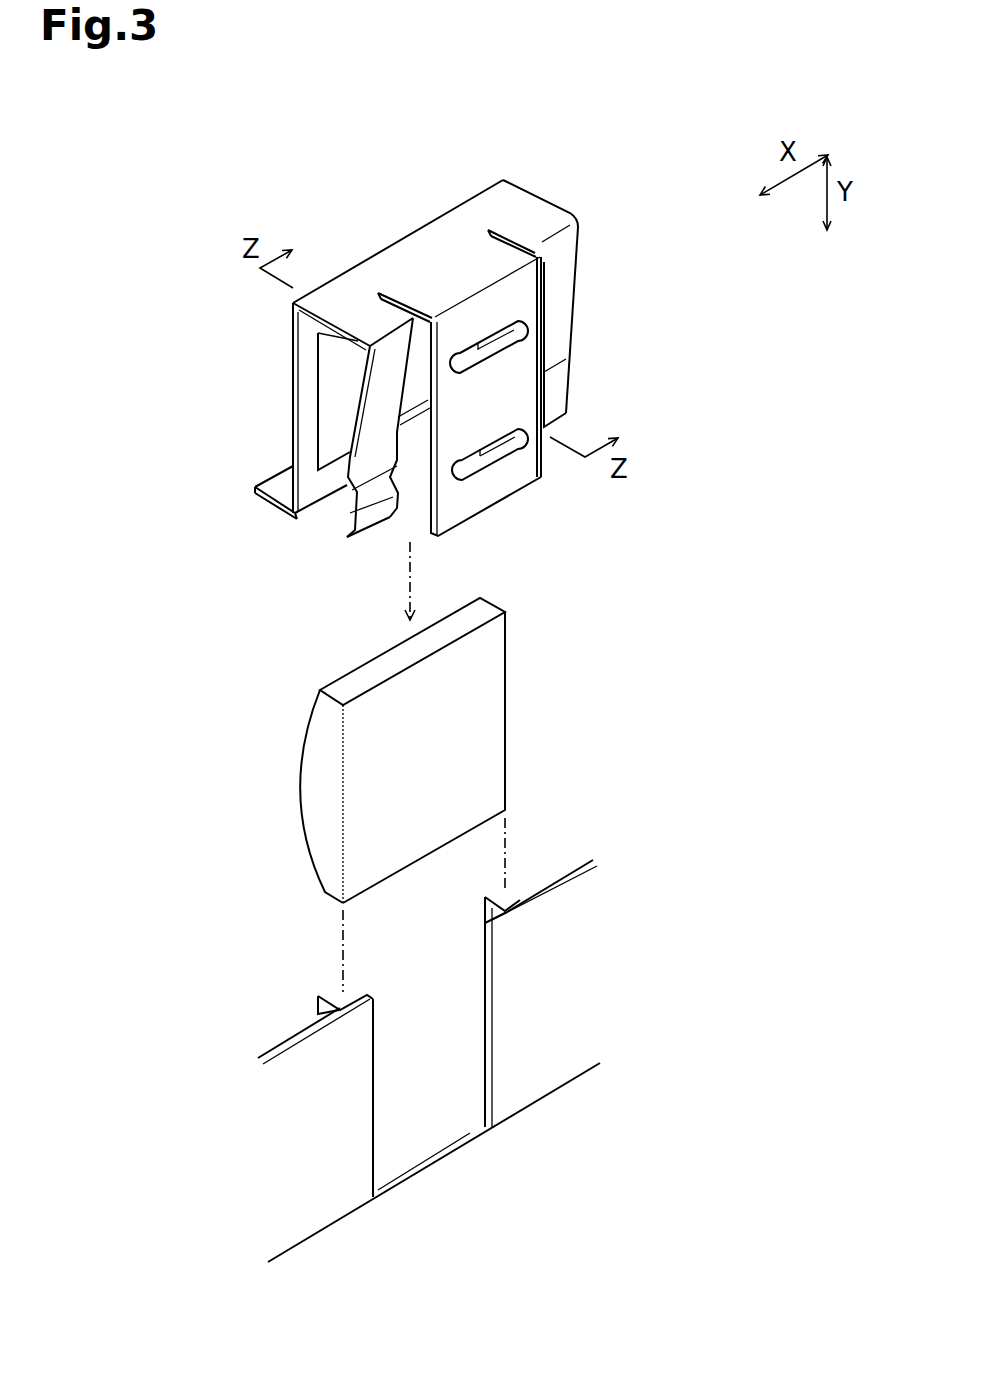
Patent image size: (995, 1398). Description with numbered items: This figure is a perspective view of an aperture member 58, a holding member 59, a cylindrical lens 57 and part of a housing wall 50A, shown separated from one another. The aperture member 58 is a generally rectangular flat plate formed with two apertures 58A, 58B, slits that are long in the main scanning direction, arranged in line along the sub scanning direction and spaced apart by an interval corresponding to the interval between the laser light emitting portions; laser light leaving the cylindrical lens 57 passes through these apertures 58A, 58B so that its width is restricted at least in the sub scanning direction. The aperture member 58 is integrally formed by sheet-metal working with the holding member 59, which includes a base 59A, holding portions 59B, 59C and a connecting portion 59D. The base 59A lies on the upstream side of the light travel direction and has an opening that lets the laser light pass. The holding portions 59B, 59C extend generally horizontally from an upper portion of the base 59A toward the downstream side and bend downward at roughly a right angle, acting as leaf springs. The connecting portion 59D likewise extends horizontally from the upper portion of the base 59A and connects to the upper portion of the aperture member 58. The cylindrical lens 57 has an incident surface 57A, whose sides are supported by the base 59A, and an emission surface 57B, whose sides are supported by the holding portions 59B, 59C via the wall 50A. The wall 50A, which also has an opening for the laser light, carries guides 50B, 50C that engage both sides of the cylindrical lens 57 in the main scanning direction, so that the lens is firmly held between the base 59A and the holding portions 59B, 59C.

The holding member 59 is at (366, 247).
The connecting portion 59D is at (465, 272).
The holding portion 59C is at (547, 213).
The base 59A is at (307, 427).
The holding portion 59B is at (376, 372).
The aperture member 58 is at (473, 500).
The aperture 58A is at (513, 318).
The aperture 58B is at (500, 463).
The cylindrical lens 57 is at (303, 724).
The incident surface 57A is at (298, 813).
The emission surface 57B is at (462, 727).
The wall 50A is at (537, 992).
The guide 50B is at (337, 988).
The guide 50C is at (475, 912).